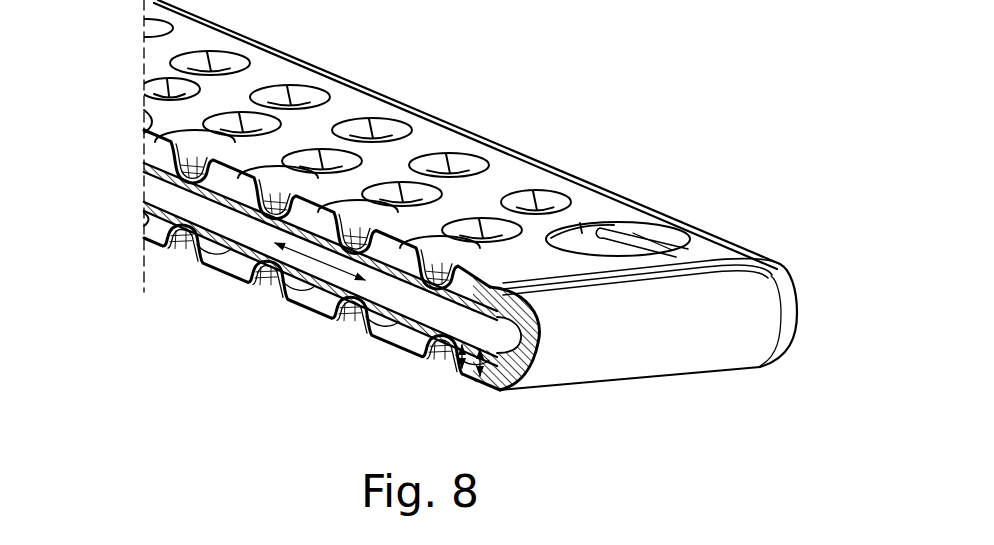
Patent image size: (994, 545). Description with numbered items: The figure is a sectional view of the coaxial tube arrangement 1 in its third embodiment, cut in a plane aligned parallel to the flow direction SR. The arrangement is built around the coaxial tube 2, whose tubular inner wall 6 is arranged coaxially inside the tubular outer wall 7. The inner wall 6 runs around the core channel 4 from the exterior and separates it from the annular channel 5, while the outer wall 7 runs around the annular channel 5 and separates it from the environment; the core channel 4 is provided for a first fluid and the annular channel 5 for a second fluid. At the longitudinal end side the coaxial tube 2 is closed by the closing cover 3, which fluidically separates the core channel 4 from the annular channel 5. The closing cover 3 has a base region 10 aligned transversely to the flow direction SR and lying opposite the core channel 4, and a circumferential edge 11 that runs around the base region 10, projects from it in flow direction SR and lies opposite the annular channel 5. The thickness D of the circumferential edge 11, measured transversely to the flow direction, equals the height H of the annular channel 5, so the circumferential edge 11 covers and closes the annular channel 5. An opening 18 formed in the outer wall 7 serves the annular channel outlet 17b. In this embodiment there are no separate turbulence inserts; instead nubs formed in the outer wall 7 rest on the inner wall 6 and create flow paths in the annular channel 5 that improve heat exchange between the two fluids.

The coaxial tube arrangement 1 is at (499, 69).
The coaxial tube 2 is at (352, 80).
The closing cover 3 is at (790, 284).
The core channel 4 is at (252, 228).
The annular channel 5 is at (398, 256).
The inner wall 6 is at (143, 202).
The outer wall 7 is at (143, 238).
The base region 10 is at (671, 348).
The circumferential edge 11 is at (566, 298).
The annular channel outlet 17b is at (674, 241).
The opening 18 is at (634, 233).
The flow direction SR is at (328, 263).
The height of the annular channel H is at (465, 371).
The thickness of the circumferential edge D is at (483, 379).